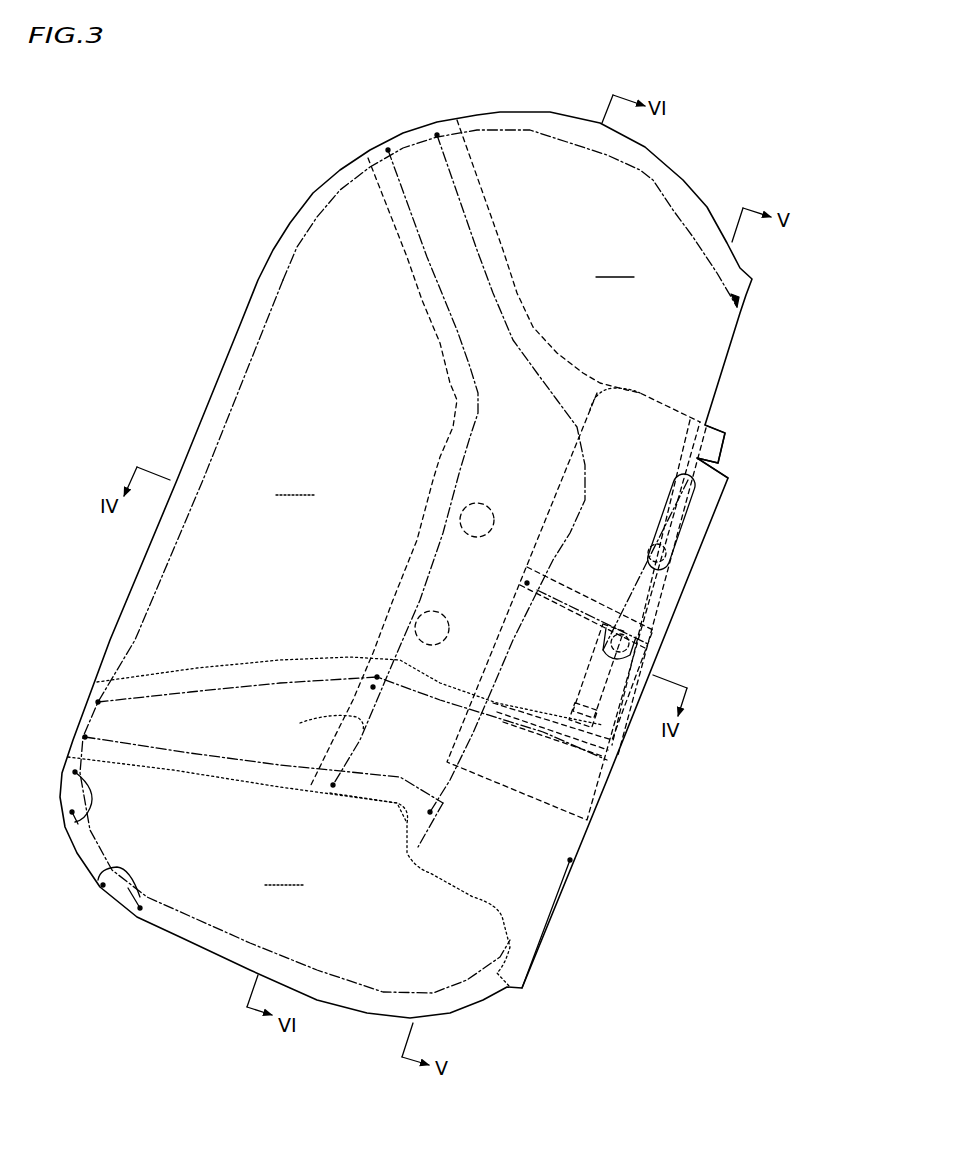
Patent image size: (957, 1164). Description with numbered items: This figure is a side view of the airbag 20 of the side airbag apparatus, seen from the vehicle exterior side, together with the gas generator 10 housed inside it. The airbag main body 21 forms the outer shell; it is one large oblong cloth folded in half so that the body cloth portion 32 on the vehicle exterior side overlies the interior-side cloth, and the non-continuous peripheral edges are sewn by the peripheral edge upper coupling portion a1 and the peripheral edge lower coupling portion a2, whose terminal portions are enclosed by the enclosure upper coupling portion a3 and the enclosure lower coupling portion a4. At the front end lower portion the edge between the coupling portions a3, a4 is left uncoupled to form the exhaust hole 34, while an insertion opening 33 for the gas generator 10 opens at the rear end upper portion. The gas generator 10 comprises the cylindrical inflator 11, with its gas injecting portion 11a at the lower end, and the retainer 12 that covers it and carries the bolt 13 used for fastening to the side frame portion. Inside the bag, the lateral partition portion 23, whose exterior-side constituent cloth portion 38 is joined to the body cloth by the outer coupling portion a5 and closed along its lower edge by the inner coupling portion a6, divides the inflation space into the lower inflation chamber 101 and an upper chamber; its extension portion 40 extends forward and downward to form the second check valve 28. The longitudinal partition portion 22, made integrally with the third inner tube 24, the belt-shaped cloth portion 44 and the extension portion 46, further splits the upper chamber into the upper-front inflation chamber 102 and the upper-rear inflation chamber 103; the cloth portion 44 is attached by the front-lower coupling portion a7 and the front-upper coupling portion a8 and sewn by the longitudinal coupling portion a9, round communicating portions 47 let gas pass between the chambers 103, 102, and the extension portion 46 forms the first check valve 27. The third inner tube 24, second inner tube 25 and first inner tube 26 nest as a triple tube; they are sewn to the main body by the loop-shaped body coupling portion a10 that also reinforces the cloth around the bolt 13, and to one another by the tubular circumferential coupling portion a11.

The airbag 20 is at (410, 557).
The airbag main body 21 is at (277, 268).
The body cloth portion 32 is at (280, 343).
The longitudinal partition portion 22 is at (508, 250).
The lateral partition portion 23 is at (302, 657).
The third inner tube 24 is at (658, 407).
The second inner tube 25 is at (597, 385).
The first inner tube 26 is at (533, 565).
The first check valve 27 is at (491, 923).
The second check valve 28 is at (470, 877).
The insertion opening 33 is at (724, 480).
The exhaust hole 34 is at (88, 857).
The constituent cloth portion 38 is at (244, 675).
The extension portion 40 is at (420, 890).
The extension portion 46 is at (425, 870).
The cloth portion 44 is at (440, 367).
The communicating portions 47 is at (487, 502).
The gas generator 10 is at (653, 659).
The inflator 11 is at (628, 675).
The gas injecting portion 11a is at (584, 712).
The retainer 12 is at (665, 592).
The bolt 13 is at (663, 557).
The lower inflation chamber 101 is at (286, 872).
The upper-front inflation chamber 102 is at (297, 482).
The upper-rear inflation chamber 103 is at (617, 264).
The peripheral edge upper coupling portion a1 is at (230, 410).
The peripheral edge lower coupling portion a2 is at (207, 927).
The enclosure upper coupling portion a3 is at (95, 803).
The enclosure lower coupling portion a4 is at (135, 882).
The outer coupling portion a5 is at (192, 687).
The inner coupling portion a6 is at (240, 762).
The front-lower coupling portion a7 is at (355, 722).
The front-upper coupling portion a8 is at (443, 301).
The longitudinal coupling portion a9 is at (575, 513).
The body coupling portion a10 is at (627, 582).
The tubular circumferential coupling portion a11 is at (580, 605).